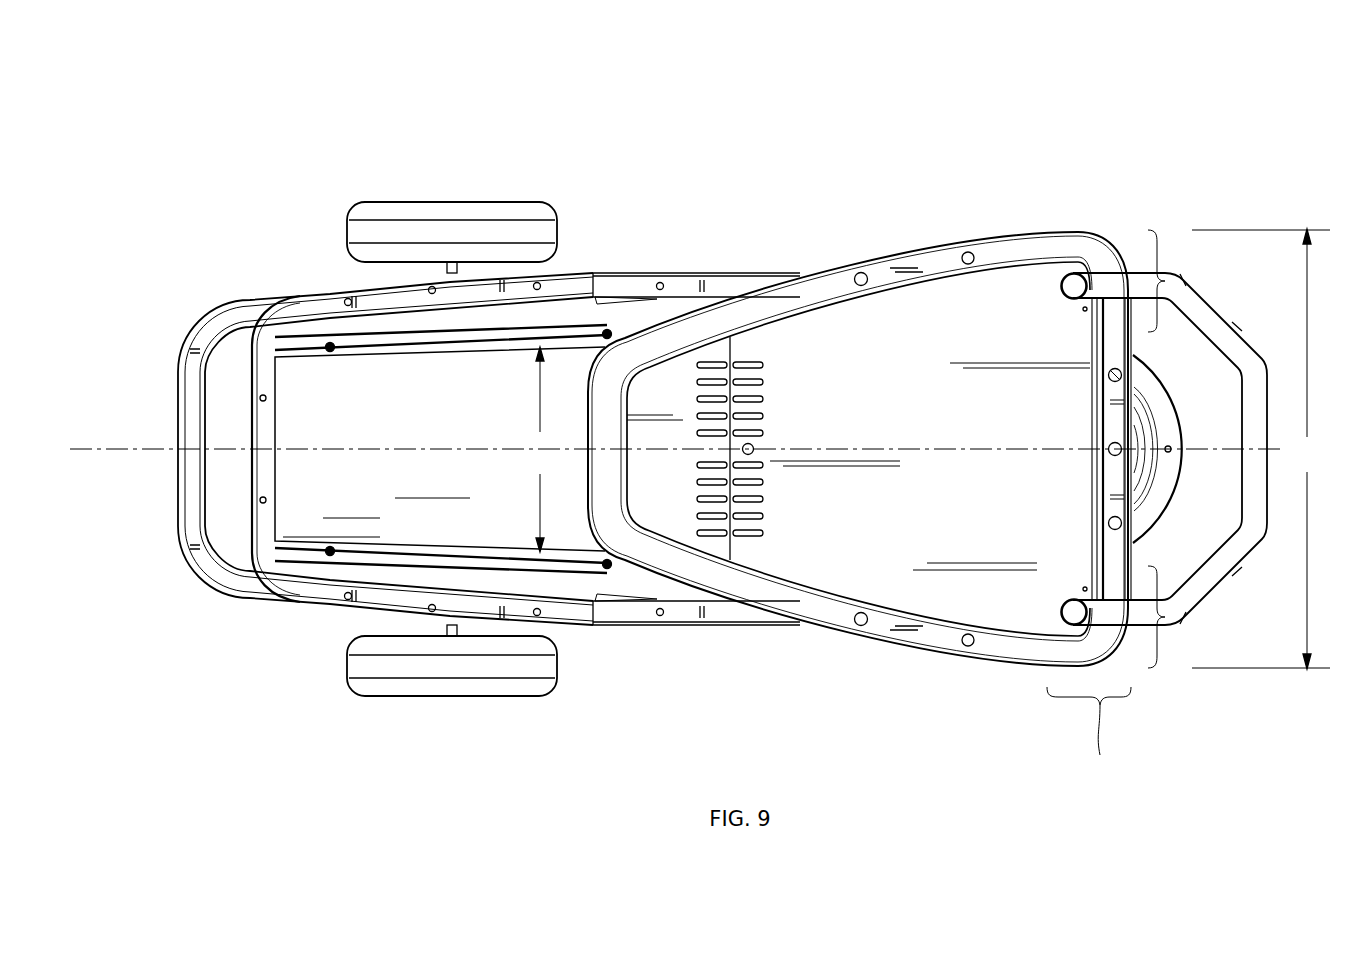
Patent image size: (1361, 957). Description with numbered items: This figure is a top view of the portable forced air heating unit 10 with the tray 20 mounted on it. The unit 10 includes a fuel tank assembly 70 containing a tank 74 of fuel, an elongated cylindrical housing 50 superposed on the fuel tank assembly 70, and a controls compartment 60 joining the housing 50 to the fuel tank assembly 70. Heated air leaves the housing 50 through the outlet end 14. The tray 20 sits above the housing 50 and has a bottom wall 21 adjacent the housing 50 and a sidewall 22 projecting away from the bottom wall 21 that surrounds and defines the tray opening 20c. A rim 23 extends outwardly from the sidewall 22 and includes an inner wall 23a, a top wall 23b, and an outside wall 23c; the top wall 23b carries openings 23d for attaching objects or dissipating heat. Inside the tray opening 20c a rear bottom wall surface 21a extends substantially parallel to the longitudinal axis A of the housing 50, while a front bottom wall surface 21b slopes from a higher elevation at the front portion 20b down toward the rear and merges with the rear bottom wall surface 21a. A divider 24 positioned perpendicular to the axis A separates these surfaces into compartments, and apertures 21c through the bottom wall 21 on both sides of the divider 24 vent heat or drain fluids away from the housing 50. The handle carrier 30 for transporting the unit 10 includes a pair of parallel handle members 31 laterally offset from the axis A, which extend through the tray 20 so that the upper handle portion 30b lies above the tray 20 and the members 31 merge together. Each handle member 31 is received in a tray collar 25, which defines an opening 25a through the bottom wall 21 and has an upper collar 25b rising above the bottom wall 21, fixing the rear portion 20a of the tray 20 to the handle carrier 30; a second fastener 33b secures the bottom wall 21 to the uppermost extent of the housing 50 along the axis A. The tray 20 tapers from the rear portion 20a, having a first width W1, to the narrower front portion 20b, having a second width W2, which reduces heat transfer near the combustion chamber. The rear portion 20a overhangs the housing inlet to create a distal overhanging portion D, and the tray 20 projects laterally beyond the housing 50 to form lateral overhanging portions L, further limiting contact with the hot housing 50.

The portable forced air heating unit 10 is at (300, 135).
The outlet end 14 is at (238, 520).
The tray 20 is at (938, 228).
The rear portion of the tray 20a is at (1105, 222).
The front portion of the tray 20b is at (648, 300).
The tray opening 20c is at (843, 387).
The bottom wall 21 is at (780, 548).
The rear bottom wall surface 21a is at (964, 458).
The front bottom wall surface 21b is at (683, 479).
The openings through the bottom wall 21c is at (767, 496).
The sidewall 22 is at (1092, 440).
The rim 23 is at (745, 298).
The inner wall of the rim 23a is at (884, 292).
The top wall of the rim 23b is at (888, 272).
The outside wall of the rim 23c is at (822, 270).
The openings in the rim top wall 23d is at (966, 265).
The divider 24 is at (733, 351).
The tray collar 25 is at (1058, 300).
The collar opening 25a is at (1080, 296).
The upper collar 25b is at (1060, 288).
The handle carrier 30 is at (1266, 558).
The upper handle portion 30b is at (1226, 594).
The handle members 31 is at (1090, 232).
The second fastener 33b is at (755, 446).
The housing 50 is at (315, 400).
The controls compartment 60 is at (656, 601).
The fuel tank assembly 70 is at (323, 597).
The fuel tank 74 is at (363, 592).
The longitudinal axis A is at (1202, 447).
The distal overhanging portion D is at (1089, 738).
The lateral overhanging portions L is at (1183, 279).
The first width W1 is at (1261, 449).
The second width W2 is at (540, 449).